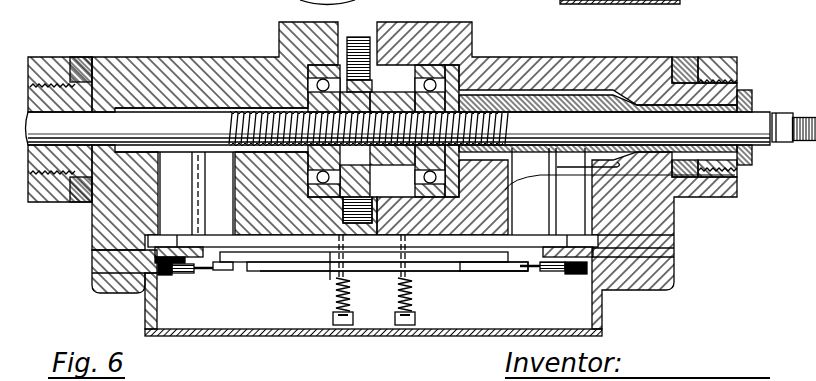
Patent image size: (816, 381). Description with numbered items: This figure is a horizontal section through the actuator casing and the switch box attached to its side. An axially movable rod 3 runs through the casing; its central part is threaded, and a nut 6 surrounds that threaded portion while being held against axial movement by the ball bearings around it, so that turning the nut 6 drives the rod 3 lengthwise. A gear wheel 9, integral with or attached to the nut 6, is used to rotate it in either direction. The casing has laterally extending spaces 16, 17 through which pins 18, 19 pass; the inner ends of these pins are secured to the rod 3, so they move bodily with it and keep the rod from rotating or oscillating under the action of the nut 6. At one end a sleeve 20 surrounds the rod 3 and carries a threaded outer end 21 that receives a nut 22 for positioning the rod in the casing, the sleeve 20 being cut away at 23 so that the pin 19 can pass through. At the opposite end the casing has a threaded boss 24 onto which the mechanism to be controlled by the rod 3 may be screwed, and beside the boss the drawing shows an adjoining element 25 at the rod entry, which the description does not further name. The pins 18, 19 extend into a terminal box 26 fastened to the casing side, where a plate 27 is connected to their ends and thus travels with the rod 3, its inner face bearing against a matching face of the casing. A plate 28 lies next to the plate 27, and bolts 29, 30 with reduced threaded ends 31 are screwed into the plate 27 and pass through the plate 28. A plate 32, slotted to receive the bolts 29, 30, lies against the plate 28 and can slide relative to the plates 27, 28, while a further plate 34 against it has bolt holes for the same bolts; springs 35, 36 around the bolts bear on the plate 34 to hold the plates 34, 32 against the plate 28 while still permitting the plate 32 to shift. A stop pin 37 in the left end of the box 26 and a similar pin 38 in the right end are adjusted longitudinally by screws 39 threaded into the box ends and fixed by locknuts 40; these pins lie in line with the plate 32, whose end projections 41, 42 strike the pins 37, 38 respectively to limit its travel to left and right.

The rod 3 is at (757, 120).
The nut 6 is at (397, 97).
The gear wheel 9 is at (387, 22).
The laterally extending space 16 is at (157, 203).
The laterally extending space 17 is at (685, 228).
The pin 18 is at (195, 165).
The pin 19 is at (569, 160).
The sleeve 20 is at (517, 98).
The threaded outer end 21 is at (741, 78).
The nut 22 is at (749, 100).
The cut-away 23 is at (735, 177).
The threaded boss 24 is at (50, 97).
The nut 25 is at (45, 72).
The terminal box 26 is at (113, 283).
The plate 27 is at (258, 243).
The plate 28 is at (280, 255).
The bolt 29 is at (343, 325).
The bolt 30 is at (405, 325).
The reduced threaded end 31 is at (333, 278).
The plate 32 is at (322, 280).
The plate 34 is at (308, 265).
The spring 35 is at (352, 305).
The spring 36 is at (415, 305).
The stop pin 37 is at (208, 272).
The pin 38 is at (550, 265).
The screw 39 is at (147, 300).
The locknut 40 is at (157, 277).
The end projection 41 is at (225, 275).
The end projection 42 is at (523, 267).